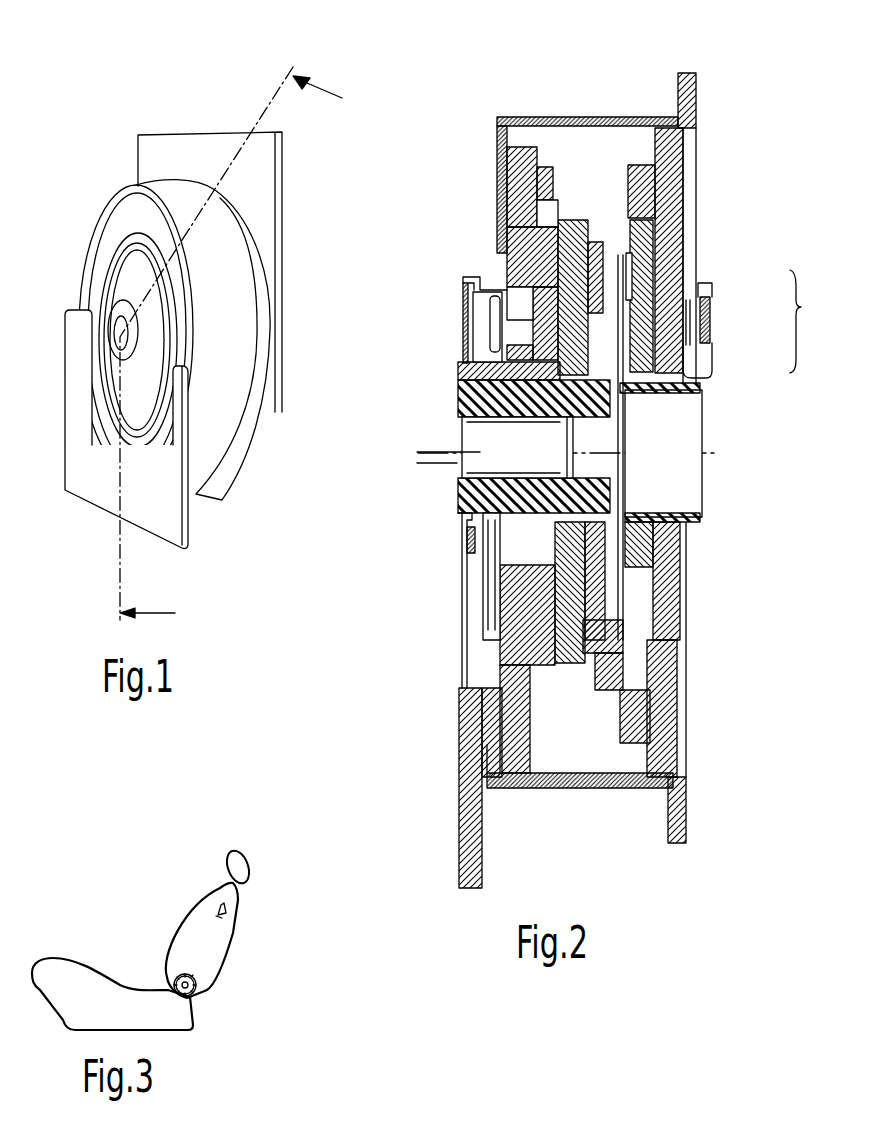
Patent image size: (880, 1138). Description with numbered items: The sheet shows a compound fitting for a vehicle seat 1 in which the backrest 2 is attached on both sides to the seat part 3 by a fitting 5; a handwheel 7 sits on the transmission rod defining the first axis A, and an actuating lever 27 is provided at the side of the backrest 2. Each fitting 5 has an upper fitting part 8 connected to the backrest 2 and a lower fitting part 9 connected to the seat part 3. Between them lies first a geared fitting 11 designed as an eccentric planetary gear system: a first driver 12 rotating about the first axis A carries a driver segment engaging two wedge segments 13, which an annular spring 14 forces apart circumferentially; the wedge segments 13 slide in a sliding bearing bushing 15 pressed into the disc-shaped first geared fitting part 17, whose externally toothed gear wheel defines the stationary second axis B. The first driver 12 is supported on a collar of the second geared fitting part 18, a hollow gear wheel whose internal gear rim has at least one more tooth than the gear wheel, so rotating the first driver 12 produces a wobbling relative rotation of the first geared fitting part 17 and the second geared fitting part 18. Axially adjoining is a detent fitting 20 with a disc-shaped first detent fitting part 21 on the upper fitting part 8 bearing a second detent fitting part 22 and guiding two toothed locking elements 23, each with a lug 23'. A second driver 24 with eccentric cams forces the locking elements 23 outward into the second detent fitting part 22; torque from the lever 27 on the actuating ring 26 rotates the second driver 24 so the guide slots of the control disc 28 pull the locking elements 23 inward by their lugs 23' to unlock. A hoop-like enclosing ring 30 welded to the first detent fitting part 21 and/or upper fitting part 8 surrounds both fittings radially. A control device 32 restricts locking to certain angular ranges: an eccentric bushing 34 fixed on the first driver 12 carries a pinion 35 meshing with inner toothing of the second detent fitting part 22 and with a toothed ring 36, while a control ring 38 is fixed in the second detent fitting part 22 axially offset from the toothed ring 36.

In FIG. 3, the vehicle seat 1 is at (100, 952).
In FIG. 3, the backrest 2 is at (197, 933).
In FIG. 3, the seat part 3 is at (122, 1003).
In FIG. 1, the fitting 5 is at (88, 190).
In FIG. 2, the fitting 5 is at (468, 142).
In FIG. 3, the fitting 5 is at (206, 1001).
In FIG. 3, the handwheel 7 is at (193, 982).
In FIG. 1, the upper fitting part 8 is at (180, 143).
In FIG. 2, the upper fitting part 8 is at (697, 102).
In FIG. 1, the lower fitting part 9 is at (113, 480).
In FIG. 2, the lower fitting part 9 is at (462, 848).
In FIG. 2, the geared fitting 11 is at (555, 155).
In FIG. 1, the first driver 12 is at (117, 292).
In FIG. 2, the first driver 12 is at (480, 500).
In FIG. 2, the wedge segments 13 is at (520, 557).
In FIG. 2, the annular spring 14 is at (493, 333).
In FIG. 2, the sliding bearing bushing 15 is at (505, 572).
In FIG. 1, the first geared fitting part 17 is at (102, 245).
In FIG. 2, the first geared fitting part 17 is at (500, 248).
In FIG. 2, the second geared fitting part 18 is at (537, 217).
In FIG. 2, the detent fitting 20 is at (628, 152).
In FIG. 2, the first detent fitting part 21 is at (665, 213).
In FIG. 2, the second detent fitting part 22 is at (640, 180).
In FIG. 2, the locking elements 23 is at (685, 393).
In FIG. 2, the lug 23' is at (603, 432).
In FIG. 2, the second driver 24 is at (660, 392).
In FIG. 2, the actuating ring 26 is at (710, 352).
In FIG. 3, the actuating lever 27 is at (223, 915).
In FIG. 2, the control disc 28 is at (630, 260).
In FIG. 1, the enclosing ring 30 is at (150, 190).
In FIG. 2, the enclosing ring 30 is at (590, 118).
In FIG. 2, the control device 32 is at (806, 321).
In FIG. 2, the eccentric bushing 34 is at (712, 343).
In FIG. 2, the pinion 35 is at (687, 327).
In FIG. 2, the toothed ring 36 is at (630, 323).
In FIG. 2, the control ring 38 is at (663, 283).
In FIG. 2, the first axis A is at (412, 452).
In FIG. 2, the second axis B is at (412, 463).